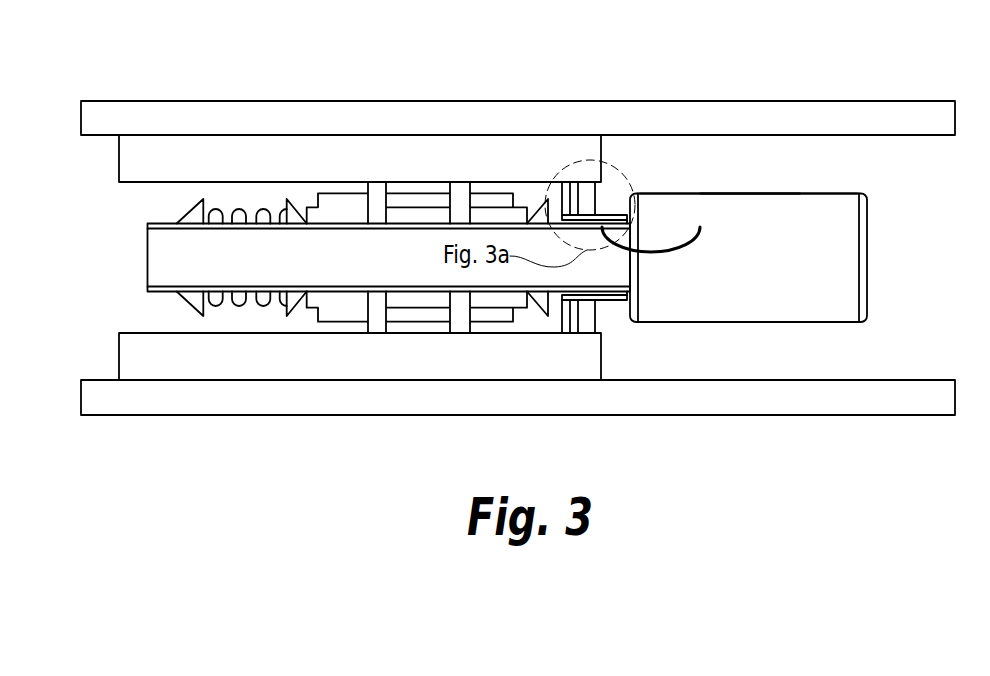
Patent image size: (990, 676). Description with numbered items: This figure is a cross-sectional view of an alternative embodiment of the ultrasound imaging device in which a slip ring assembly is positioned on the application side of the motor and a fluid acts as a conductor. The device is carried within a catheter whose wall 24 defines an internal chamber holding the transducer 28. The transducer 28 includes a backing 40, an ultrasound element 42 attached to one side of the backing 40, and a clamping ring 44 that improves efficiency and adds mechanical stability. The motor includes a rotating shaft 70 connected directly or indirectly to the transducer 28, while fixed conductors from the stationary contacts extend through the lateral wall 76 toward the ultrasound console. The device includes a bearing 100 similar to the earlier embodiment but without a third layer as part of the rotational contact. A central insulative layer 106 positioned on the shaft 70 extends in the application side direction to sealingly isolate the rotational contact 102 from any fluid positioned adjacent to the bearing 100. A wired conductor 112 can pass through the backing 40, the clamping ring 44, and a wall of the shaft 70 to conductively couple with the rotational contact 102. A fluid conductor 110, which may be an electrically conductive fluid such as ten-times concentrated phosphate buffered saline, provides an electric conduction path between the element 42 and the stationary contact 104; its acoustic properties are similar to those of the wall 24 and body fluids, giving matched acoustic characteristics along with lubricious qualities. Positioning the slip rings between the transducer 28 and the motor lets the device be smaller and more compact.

The wall 24 is at (543, 115).
The transducer 28 is at (775, 172).
The backing 40 is at (807, 252).
The ultrasound element 42 is at (838, 203).
The clamping ring 44 is at (766, 176).
The rotating shaft 70 is at (163, 222).
The lateral wall 76 is at (424, 160).
The bearing 100 is at (653, 129).
The rotational contact 102 is at (617, 214).
The stationary contact 104 is at (588, 190).
The central insulative layer 106 is at (605, 300).
The fluid conductor 110 is at (817, 181).
The wired conductor 112 is at (677, 252).